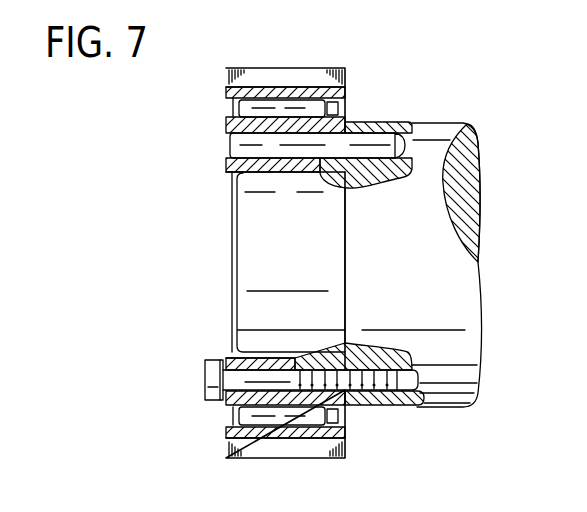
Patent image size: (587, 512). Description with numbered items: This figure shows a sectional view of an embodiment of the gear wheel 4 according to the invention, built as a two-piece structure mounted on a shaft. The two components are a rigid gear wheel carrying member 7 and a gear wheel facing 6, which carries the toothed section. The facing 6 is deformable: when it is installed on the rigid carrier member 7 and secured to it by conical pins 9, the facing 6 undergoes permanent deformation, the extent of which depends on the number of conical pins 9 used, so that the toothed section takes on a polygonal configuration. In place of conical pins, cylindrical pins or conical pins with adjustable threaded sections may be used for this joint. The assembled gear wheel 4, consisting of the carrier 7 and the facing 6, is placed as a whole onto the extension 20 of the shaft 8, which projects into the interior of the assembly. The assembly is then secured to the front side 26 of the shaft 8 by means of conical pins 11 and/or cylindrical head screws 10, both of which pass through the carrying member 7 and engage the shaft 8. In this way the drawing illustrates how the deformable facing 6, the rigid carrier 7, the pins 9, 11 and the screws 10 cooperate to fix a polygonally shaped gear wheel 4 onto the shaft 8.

The gear wheel 4 is at (341, 67).
The gear wheel facing 6 is at (262, 70).
The gear wheel carrying member 7 is at (226, 357).
The shaft 8 is at (436, 137).
The conical pins 9 is at (236, 105).
The cylindrical head screws 10 is at (203, 380).
The conical pins 11 is at (246, 140).
The extension 20 is at (266, 232).
The front side 26 is at (345, 272).